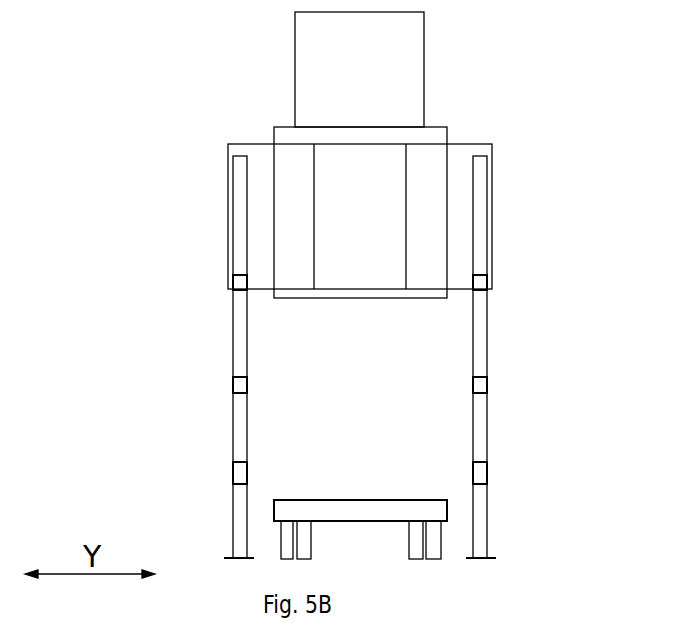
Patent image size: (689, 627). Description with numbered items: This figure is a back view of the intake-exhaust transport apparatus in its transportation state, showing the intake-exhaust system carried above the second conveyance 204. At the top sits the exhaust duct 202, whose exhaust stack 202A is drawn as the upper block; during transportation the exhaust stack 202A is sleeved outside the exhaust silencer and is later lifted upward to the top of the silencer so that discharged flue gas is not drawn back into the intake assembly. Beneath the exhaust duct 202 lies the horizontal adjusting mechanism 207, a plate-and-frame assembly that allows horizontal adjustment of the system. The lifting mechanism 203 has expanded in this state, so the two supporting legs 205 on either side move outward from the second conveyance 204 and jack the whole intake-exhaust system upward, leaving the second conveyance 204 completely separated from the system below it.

The exhaust duct 202 is at (253, 69).
The exhaust stack 202A is at (300, 69).
The horizontal adjusting mechanism 207 is at (415, 182).
The lifting mechanism 203 is at (264, 351).
The supporting legs 205 is at (222, 423).
The second conveyance 204 is at (266, 510).